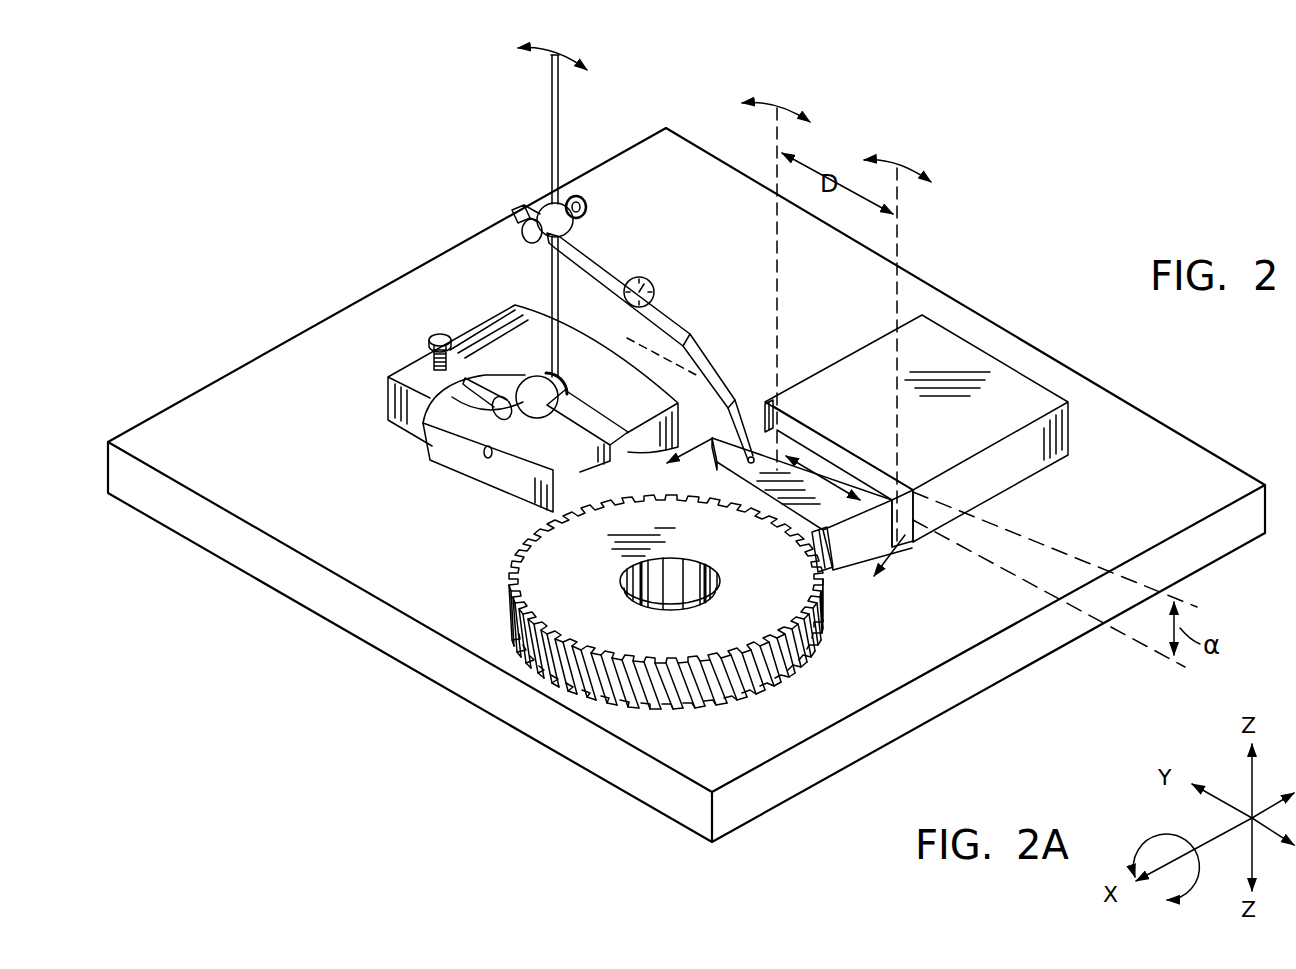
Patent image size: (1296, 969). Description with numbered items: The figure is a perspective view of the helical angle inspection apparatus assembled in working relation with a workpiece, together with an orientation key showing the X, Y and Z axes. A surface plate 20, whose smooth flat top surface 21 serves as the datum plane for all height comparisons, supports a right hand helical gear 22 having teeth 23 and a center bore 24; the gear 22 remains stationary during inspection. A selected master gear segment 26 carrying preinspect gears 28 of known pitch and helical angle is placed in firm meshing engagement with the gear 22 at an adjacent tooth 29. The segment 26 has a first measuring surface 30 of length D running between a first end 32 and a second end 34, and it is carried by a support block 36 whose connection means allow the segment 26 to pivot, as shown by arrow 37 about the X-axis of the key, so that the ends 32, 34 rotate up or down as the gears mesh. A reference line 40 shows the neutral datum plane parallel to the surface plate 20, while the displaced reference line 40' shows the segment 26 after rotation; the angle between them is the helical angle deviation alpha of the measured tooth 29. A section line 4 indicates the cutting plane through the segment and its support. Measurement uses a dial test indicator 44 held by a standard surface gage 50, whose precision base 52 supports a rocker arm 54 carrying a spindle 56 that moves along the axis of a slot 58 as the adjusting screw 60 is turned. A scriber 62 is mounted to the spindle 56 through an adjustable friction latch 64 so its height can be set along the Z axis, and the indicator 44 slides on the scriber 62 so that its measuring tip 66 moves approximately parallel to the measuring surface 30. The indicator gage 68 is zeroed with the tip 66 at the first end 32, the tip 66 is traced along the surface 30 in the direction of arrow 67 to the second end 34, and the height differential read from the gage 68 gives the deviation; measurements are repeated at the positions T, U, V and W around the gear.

In FIG. 2, the surface plate 20 is at (145, 497).
In FIG. 2, the planar top surface of base plate 21 is at (222, 385).
In FIG. 2, the right hand helical gear 22 is at (556, 598).
In FIG. 2, the teeth 23 is at (668, 712).
In FIG. 2, the center bore 24 is at (690, 612).
In FIG. 2, the selected master gear segment 26 is at (915, 545).
In FIG. 2, the preinspect gears 28 is at (830, 575).
In FIG. 2, the adjacent tooth 29 is at (752, 512).
In FIG. 2, the first measuring surface 30 is at (845, 472).
In FIG. 2, the first end 32 is at (878, 490).
In FIG. 2, the second end 34 is at (783, 428).
In FIG. 2, the support block 36 is at (1005, 481).
In FIG. 2A, the arrow 37 is at (1150, 838).
In FIG. 2, the reference line 40 is at (1049, 612).
In FIG. 2, the new reference line 40' is at (1087, 549).
In FIG. 2, the dial test indicator 44 is at (600, 255).
In FIG. 2, the surface gage 50 is at (456, 300).
In FIG. 2, the precision base 52 is at (443, 460).
In FIG. 2, the rocker arm 54 is at (488, 459).
In FIG. 2, the spindle 56 is at (545, 112).
In FIG. 2, the slot 58 is at (425, 450).
In FIG. 2, the adjusting screw 60 is at (430, 343).
In FIG. 2, the scriber 62 is at (512, 215).
In FIG. 2, the adjustable friction latch 64 is at (590, 205).
In FIG. 2, the measuring tip 66 is at (752, 410).
In FIG. 2, the arrow 67 is at (812, 468).
In FIG. 2, the indicator gage 68 is at (656, 292).
In FIG. 2, the section line 4- 4 is at (773, 521).